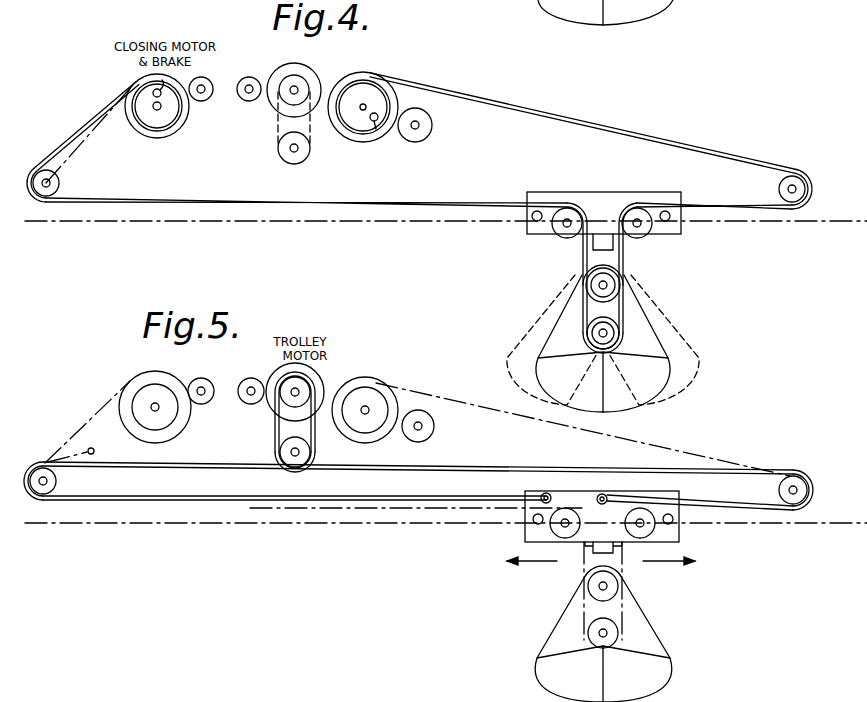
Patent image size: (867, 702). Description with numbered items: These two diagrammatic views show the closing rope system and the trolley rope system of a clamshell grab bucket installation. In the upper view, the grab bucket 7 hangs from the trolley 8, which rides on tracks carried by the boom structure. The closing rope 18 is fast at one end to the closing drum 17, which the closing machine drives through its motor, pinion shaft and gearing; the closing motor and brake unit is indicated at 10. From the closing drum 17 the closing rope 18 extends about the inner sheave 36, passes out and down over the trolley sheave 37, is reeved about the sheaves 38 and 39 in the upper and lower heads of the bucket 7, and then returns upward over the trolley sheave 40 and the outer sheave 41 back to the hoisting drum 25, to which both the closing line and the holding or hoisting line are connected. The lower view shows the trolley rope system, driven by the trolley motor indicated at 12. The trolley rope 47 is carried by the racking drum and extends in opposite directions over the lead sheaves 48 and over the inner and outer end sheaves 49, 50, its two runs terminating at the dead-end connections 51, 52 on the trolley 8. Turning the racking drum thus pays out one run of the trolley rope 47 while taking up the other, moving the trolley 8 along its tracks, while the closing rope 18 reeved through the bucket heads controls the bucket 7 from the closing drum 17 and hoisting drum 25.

In FIG. 4, the grab bucket 7 is at (560, 333).
In FIG. 5, the grab bucket 7 is at (640, 630).
In FIG. 5, the trolley 8 is at (668, 535).
In FIG. 4, the closing motor and brake 10 is at (118, 80).
In FIG. 5, the trolley motor 12 is at (323, 373).
In FIG. 4, the closing drum 17 is at (167, 113).
In FIG. 4, the closing rope 18 is at (167, 199).
In FIG. 4, the hoisting drum 25 is at (375, 97).
In FIG. 4, the inner sheave 36 is at (58, 180).
In FIG. 4, the trolley sheave 37 is at (567, 236).
In FIG. 4, the sheave in the upper head of the bucket 38 is at (585, 285).
In FIG. 4, the sheave in the lower head of the bucket 39 is at (612, 332).
In FIG. 4, the trolley sheave 40 is at (638, 236).
In FIG. 4, the outer sheave 41 is at (777, 185).
In FIG. 5, the trolley rope 47 is at (277, 425).
In FIG. 5, the lead sheaves 48 is at (297, 462).
In FIG. 5, the inner end sheave 49 is at (52, 481).
In FIG. 5, the outer end sheave 50 is at (783, 482).
In FIG. 5, the dead-end connection 51 is at (549, 494).
In FIG. 5, the dead-end connection 52 is at (604, 494).